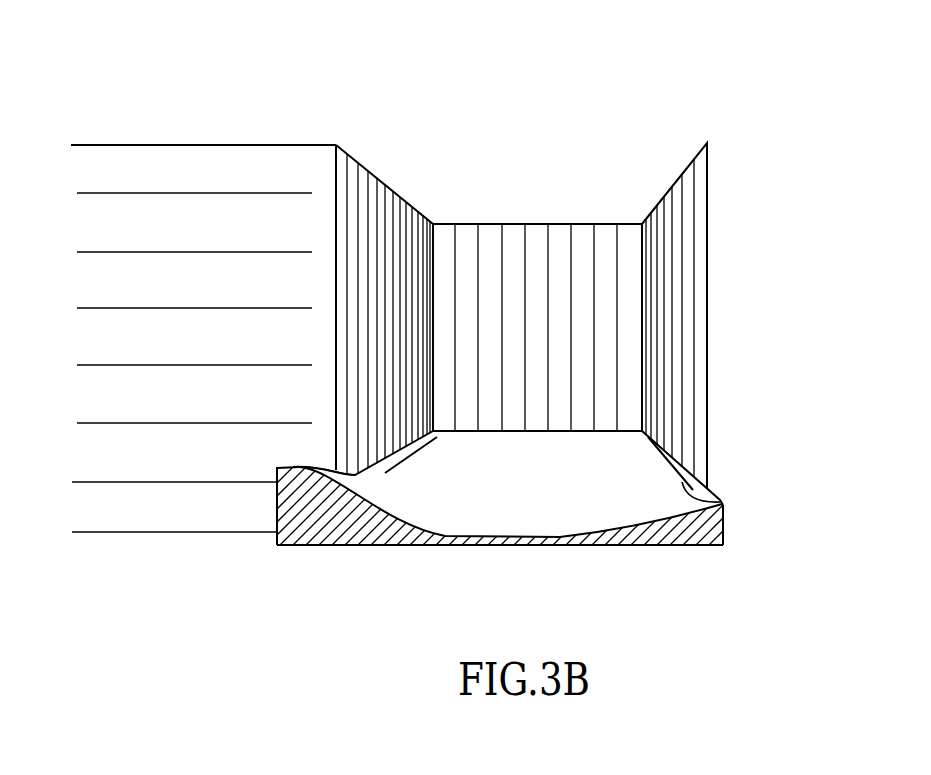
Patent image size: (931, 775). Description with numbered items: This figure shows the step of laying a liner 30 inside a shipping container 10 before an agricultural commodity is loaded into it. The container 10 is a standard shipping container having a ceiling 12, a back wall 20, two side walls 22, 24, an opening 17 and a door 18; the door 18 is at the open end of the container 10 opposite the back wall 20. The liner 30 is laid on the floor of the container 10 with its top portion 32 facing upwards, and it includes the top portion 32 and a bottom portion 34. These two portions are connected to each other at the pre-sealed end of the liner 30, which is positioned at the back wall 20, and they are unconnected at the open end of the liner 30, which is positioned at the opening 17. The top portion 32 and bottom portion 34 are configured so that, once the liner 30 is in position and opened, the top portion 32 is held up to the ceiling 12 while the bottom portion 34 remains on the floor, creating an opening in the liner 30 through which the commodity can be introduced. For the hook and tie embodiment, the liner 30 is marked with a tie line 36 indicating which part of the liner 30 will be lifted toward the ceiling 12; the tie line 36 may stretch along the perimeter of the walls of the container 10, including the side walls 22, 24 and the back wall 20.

The container 10 is at (591, 118).
The ceiling 12 is at (544, 308).
The opening 17 is at (680, 438).
The door 18 is at (158, 193).
The back wall 20 is at (547, 262).
The side wall 22 is at (661, 236).
The side wall 24 is at (379, 208).
The liner 30 is at (520, 528).
The top portion 32 is at (627, 488).
The bottom portion 34 is at (663, 550).
The tie line 36 is at (408, 453).